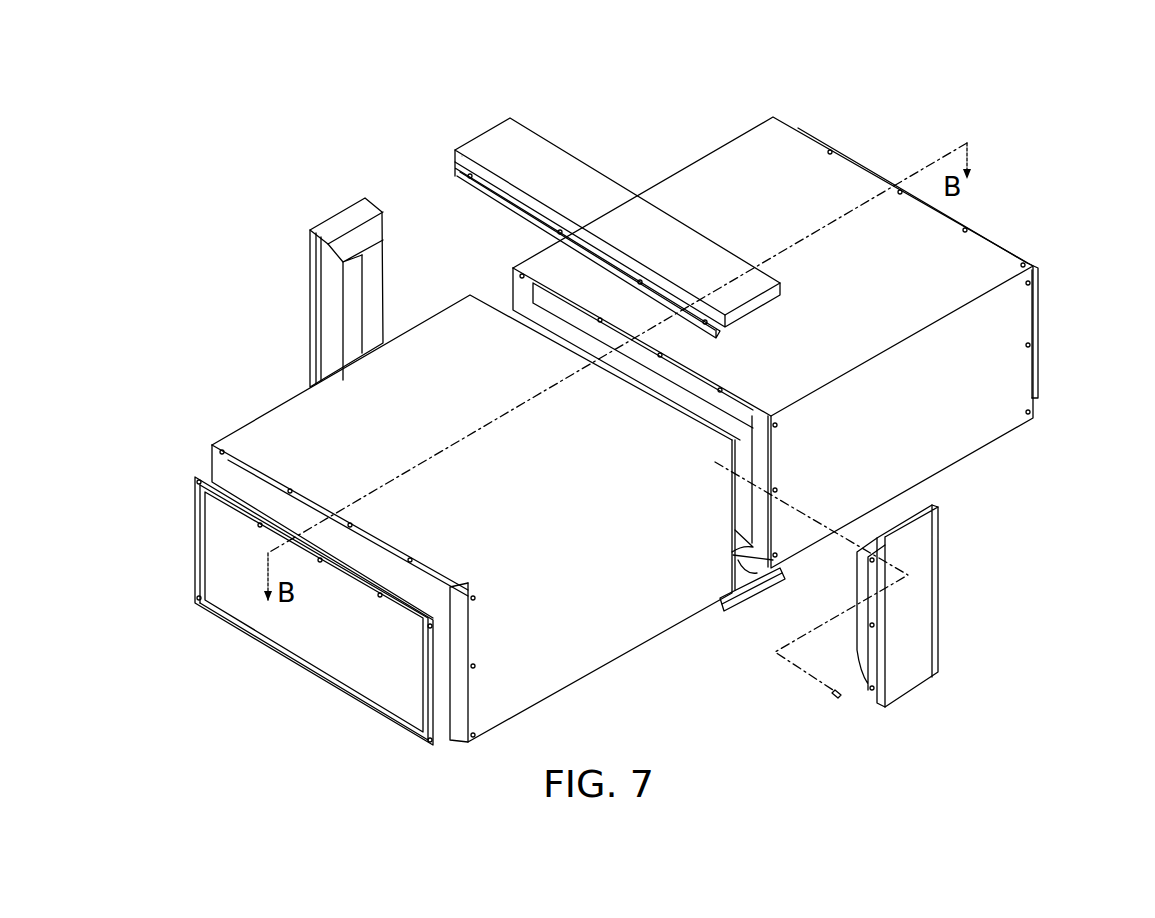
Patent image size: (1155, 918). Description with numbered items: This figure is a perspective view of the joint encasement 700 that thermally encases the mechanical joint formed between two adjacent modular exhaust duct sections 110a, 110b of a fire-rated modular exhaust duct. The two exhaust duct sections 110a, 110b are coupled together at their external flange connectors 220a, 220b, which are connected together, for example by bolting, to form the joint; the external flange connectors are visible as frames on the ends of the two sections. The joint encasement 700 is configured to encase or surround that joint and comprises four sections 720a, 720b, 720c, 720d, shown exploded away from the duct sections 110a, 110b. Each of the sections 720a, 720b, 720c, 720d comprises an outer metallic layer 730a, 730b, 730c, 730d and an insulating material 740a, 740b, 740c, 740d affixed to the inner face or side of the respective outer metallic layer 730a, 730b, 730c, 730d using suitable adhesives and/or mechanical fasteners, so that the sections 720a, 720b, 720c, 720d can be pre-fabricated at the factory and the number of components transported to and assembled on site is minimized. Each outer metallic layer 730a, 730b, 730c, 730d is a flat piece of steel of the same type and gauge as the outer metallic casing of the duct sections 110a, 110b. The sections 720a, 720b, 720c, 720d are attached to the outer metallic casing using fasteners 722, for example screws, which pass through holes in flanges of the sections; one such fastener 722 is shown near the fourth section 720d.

The joint encasement 700 is at (584, 132).
The exhaust duct section 110a is at (645, 673).
The exhaust duct section 110b is at (972, 474).
The external flange connector 220a is at (422, 731).
The external flange connector 220b is at (1020, 263).
The joint encasement section 720a is at (781, 535).
The joint encasement section 720b is at (291, 267).
The joint encasement section 720c is at (655, 197).
The joint encasement section 720d is at (933, 631).
The fastener 722 is at (832, 699).
The outer metallic layer 730a is at (857, 567).
The outer metallic layer 730b is at (312, 262).
The outer metallic layer 730c is at (558, 182).
The outer metallic layer 730d is at (910, 625).
The insulating material 740a is at (784, 545).
The insulating material 740b is at (338, 284).
The insulating material 740c is at (755, 306).
The insulating material 740d is at (868, 693).